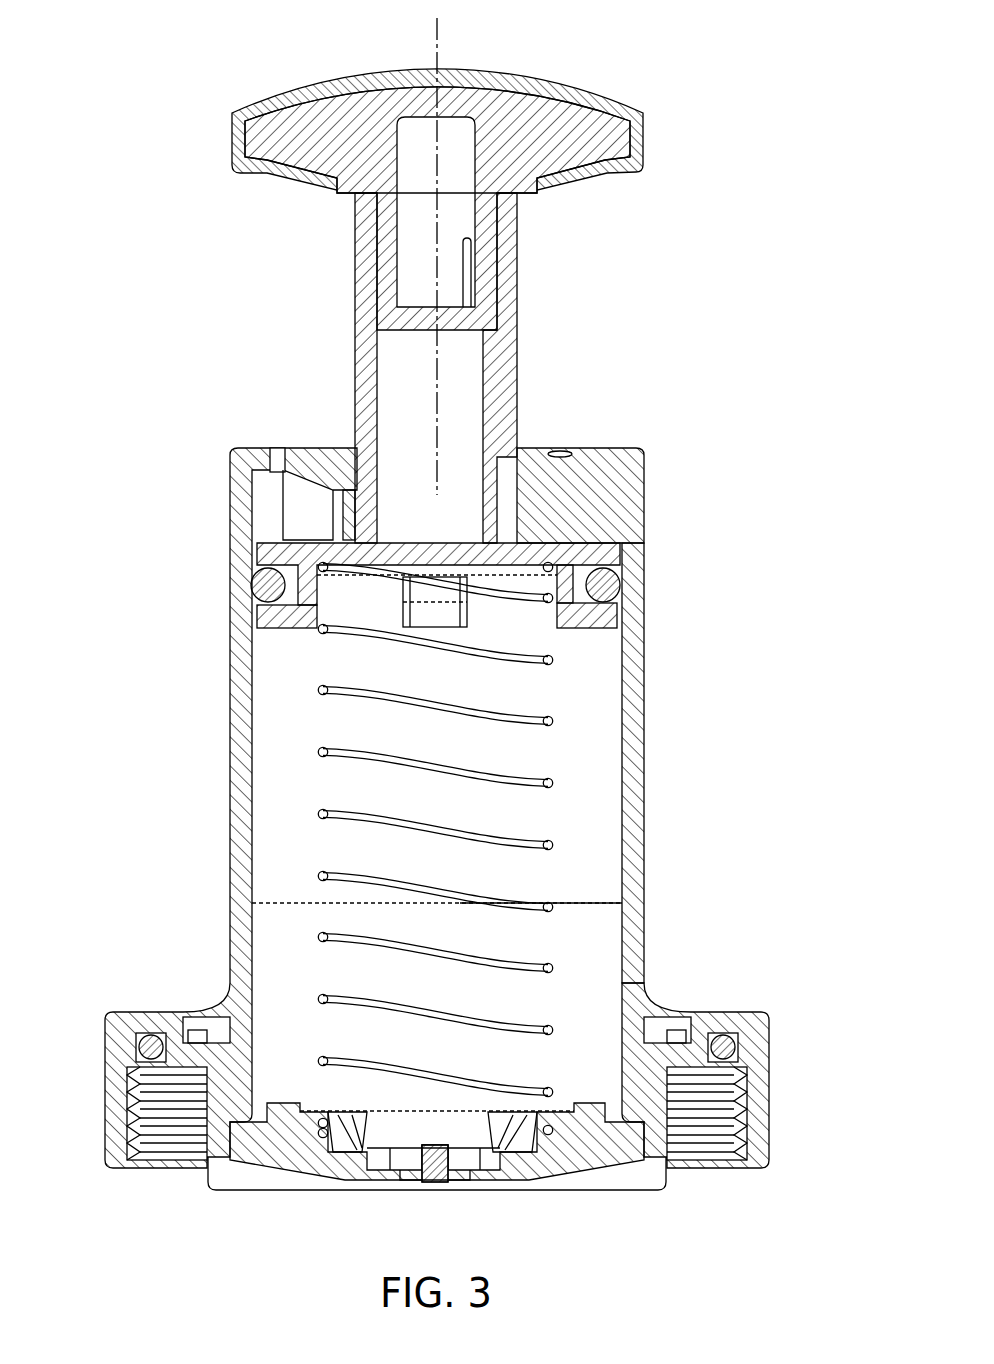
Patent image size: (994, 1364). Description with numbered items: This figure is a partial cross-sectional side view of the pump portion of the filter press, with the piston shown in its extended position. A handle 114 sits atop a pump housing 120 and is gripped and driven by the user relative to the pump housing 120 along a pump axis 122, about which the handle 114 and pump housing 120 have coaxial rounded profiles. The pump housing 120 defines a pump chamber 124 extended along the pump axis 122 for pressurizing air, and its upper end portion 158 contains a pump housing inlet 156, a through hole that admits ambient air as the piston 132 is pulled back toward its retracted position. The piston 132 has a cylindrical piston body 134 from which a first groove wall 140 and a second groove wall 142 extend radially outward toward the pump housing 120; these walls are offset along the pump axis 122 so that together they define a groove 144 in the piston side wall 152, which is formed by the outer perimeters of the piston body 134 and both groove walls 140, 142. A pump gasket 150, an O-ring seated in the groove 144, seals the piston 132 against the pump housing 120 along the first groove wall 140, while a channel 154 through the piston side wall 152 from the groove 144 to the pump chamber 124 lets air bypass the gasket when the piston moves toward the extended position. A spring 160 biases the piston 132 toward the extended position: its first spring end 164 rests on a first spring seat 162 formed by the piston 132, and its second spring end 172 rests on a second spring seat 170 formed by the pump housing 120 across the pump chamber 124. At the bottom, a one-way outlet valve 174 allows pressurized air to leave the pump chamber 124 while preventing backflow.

The handle 114 is at (585, 128).
The pump housing 120 is at (634, 788).
The pump axis 122 is at (438, 43).
The pump chamber 124 is at (622, 997).
The piston 132 is at (308, 553).
The piston body 134 is at (567, 545).
The first groove wall 140 is at (597, 557).
The second groove wall 142 is at (597, 617).
The groove 144 is at (290, 588).
The pump gasket 150 is at (620, 590).
The piston side wall 152 is at (265, 592).
The channel 154 is at (455, 607).
The pump housing inlet 156 is at (282, 455).
The upper end portion 158 is at (633, 518).
The spring 160 is at (517, 902).
The first spring seat 162 is at (525, 573).
The first spring end 164 is at (320, 568).
The second spring seat 170 is at (311, 1118).
The second spring end 172 is at (328, 1112).
The outlet valve 174 is at (478, 1172).